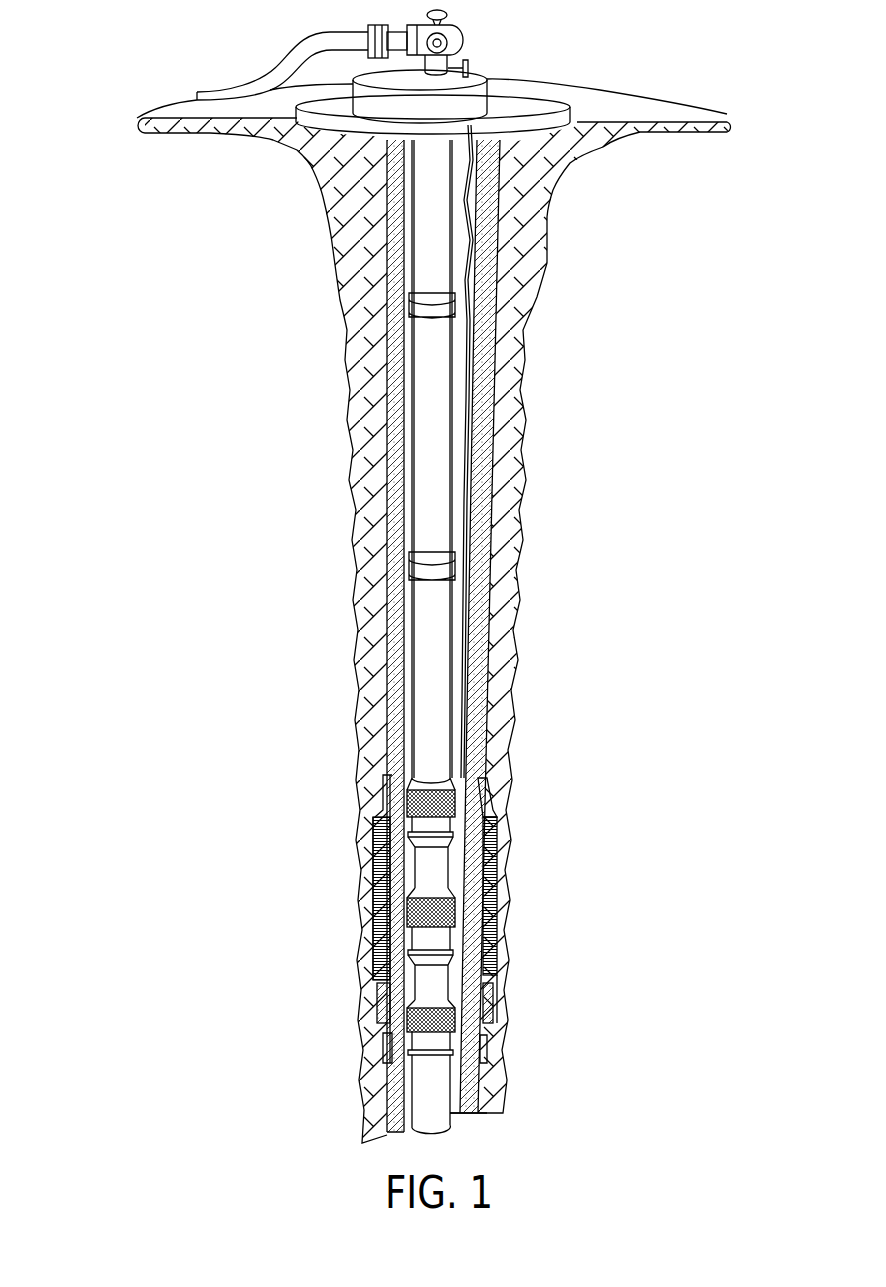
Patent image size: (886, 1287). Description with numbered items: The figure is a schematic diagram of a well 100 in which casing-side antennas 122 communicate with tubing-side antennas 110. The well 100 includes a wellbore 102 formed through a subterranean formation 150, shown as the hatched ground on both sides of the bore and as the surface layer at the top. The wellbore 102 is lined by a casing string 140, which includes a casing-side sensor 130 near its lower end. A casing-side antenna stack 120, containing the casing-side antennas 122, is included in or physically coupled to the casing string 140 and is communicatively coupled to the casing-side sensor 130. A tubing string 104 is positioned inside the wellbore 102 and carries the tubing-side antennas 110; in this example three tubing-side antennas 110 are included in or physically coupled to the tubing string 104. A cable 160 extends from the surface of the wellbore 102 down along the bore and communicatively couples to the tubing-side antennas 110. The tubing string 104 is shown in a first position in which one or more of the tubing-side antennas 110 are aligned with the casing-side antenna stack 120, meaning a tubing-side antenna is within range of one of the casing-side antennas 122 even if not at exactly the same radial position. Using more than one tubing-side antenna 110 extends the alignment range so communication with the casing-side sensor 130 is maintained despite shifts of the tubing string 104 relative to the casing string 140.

The well 100 is at (96, 50).
The wellbore 102 is at (387, 241).
The tubing string 104 is at (413, 648).
The tubing-side antennas 110 is at (410, 942).
The casing-side antenna stack 120 is at (491, 812).
The casing-side antennas 122 is at (487, 867).
The casing-side sensor 130 is at (492, 988).
The casing string 140 is at (483, 608).
The subterranean formation 150 is at (476, 194).
The cable 160 is at (469, 192).